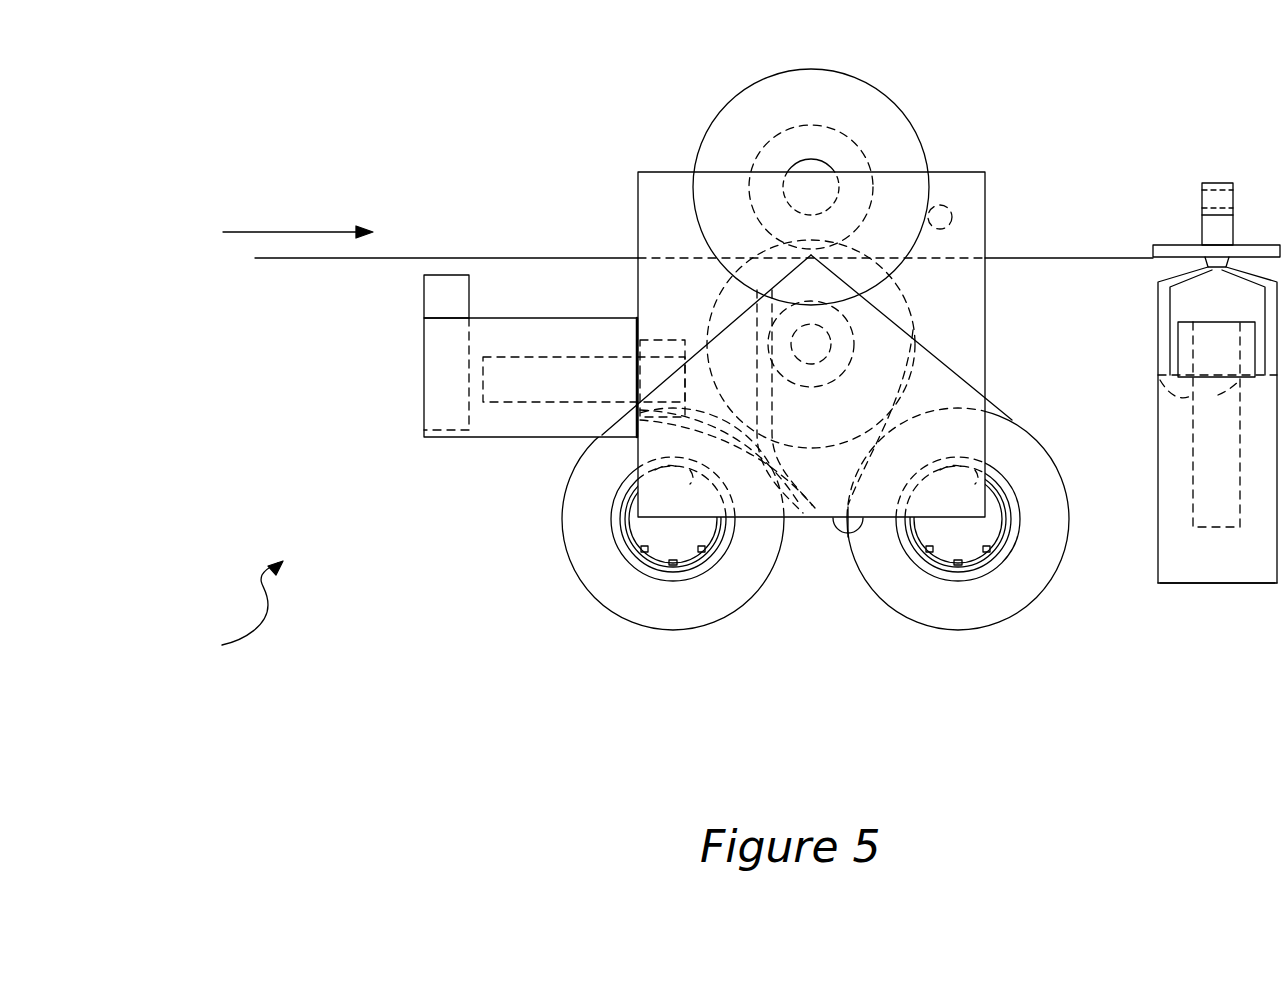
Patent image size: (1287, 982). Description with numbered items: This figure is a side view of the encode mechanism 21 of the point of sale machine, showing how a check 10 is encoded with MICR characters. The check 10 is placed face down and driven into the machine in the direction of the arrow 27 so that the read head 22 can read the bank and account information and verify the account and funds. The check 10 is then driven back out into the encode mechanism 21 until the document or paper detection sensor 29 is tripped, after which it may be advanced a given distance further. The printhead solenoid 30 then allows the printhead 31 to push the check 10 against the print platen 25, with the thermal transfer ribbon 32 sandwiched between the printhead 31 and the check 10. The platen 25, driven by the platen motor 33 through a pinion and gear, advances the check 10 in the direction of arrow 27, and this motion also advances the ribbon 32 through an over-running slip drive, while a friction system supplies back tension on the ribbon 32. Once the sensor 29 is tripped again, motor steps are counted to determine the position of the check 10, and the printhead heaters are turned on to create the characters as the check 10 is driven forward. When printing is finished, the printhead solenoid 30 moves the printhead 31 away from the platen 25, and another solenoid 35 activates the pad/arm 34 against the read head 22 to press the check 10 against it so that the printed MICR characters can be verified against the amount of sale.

The check 10 is at (502, 258).
The encode mechanism 21 is at (229, 616).
The readhead 22 is at (1158, 326).
The print platen 25 is at (823, 122).
The arrow 27 is at (293, 230).
The paper detection sensor 29 is at (424, 302).
The printhead solenoid 30 is at (515, 438).
The printhead 31 is at (800, 490).
The thermal transfer ribbon 32 is at (935, 357).
The platen motor 33 is at (655, 172).
The pad/arm 34 is at (1222, 183).
The solenoid 35 is at (1183, 585).